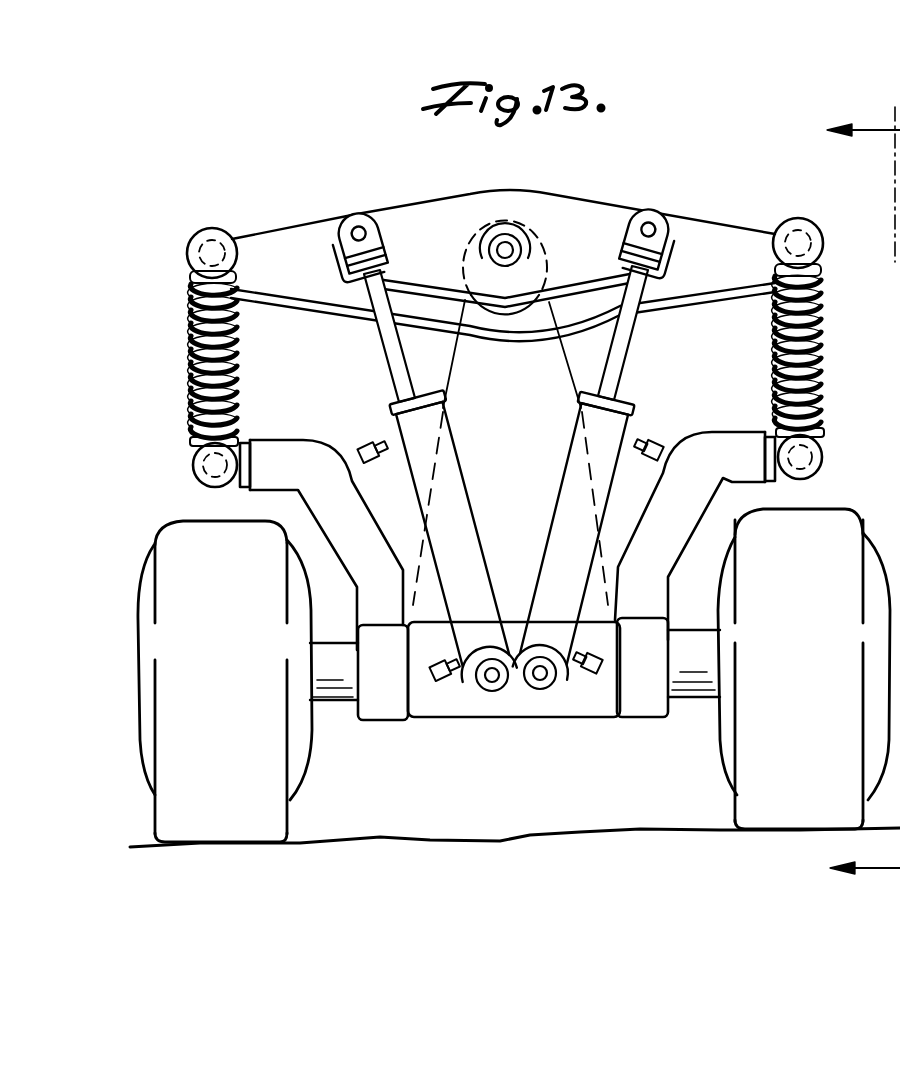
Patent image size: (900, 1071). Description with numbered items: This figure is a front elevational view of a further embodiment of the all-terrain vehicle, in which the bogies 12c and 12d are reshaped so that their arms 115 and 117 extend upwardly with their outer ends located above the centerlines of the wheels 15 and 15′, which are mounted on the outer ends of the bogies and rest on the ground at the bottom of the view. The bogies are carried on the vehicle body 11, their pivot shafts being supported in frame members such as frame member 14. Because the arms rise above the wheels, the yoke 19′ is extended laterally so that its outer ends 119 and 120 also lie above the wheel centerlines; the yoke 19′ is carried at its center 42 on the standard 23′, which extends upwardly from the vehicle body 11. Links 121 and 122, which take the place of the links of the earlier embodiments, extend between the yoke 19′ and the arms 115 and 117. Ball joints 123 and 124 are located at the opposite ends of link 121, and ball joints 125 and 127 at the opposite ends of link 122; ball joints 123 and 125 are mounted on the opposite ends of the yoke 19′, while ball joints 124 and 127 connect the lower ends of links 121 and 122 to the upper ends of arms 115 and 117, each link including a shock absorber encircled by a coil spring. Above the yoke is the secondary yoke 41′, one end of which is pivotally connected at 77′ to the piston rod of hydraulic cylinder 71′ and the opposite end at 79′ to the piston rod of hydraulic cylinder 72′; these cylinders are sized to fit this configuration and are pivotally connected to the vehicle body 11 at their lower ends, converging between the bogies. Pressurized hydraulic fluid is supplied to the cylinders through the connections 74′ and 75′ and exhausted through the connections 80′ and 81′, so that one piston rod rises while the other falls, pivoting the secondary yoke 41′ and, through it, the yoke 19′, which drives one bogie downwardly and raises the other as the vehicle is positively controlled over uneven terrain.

The frame member 14 is at (863, 505).
The secondary yoke 41′ is at (463, 208).
The outer end of yoke 120 is at (270, 240).
The outer end of yoke 119 is at (757, 233).
The yoke 19′ is at (727, 228).
The central pivot bushing 42 is at (508, 247).
The standard 23′ is at (549, 345).
The pivotal connection 77′ is at (397, 363).
The pivotal connection 79′ is at (623, 362).
The hydraulic cylinder 71′ is at (451, 493).
The hydraulic cylinder 72′ is at (570, 448).
The hydraulic fitting 80′ is at (385, 440).
The hydraulic fitting 75′ is at (672, 415).
The hydraulic fitting 74′ is at (448, 670).
The hydraulic fitting 81′ is at (600, 660).
The ball joint 125 is at (199, 208).
The ball joint 123 is at (840, 206).
The link 122 is at (241, 351).
The link 121 is at (822, 340).
The ball joint 127 is at (193, 481).
The ball joint 124 is at (823, 456).
The arm 117 is at (282, 452).
The arm 115 is at (742, 414).
The vehicle body 11 is at (513, 622).
The bogie 12d is at (380, 720).
The bogie 12c is at (637, 705).
The wheel 15′ is at (270, 810).
The wheel 15 is at (753, 795).